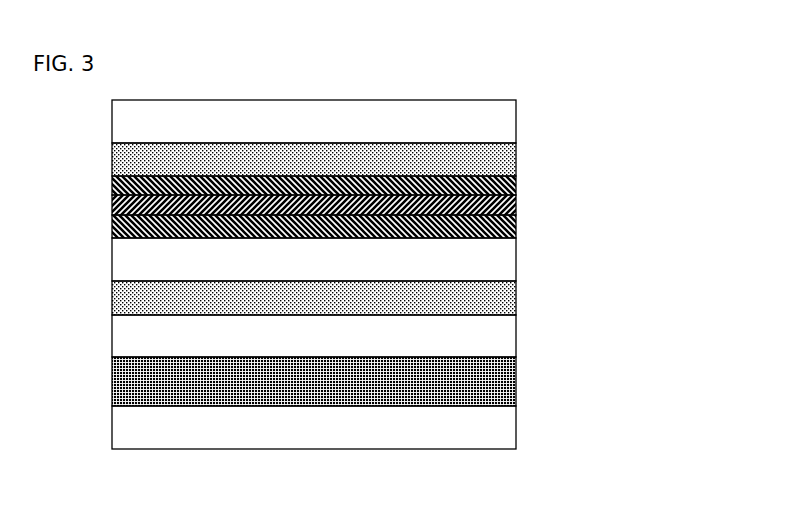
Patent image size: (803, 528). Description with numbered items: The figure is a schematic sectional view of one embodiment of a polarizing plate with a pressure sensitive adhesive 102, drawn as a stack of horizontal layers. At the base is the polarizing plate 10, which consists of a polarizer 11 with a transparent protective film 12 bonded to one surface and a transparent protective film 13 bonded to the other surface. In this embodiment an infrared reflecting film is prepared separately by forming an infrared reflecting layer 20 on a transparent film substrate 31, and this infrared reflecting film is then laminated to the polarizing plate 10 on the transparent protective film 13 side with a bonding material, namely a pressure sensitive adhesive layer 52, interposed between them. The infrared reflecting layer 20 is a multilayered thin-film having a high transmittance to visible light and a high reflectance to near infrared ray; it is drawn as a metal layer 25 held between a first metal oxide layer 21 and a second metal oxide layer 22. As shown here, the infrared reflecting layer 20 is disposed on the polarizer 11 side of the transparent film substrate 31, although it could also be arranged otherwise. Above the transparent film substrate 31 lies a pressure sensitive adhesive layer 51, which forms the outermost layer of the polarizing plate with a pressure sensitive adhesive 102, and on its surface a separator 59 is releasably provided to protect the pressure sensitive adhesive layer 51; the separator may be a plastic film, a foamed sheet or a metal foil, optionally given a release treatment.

The polarizing plate with a pressure sensitive adhesive 102 is at (390, 274).
The separator 59 is at (513, 124).
The pressure sensitive adhesive layer 51 is at (513, 160).
The infrared reflecting layer 20 is at (363, 208).
The first metal oxide layer 21 is at (517, 185).
The metal layer 25 is at (517, 206).
The second metal oxide layer 22 is at (343, 228).
The transparent film substrate 31 is at (517, 258).
The pressure sensitive adhesive layer 52 is at (517, 299).
The polarizing plate 10 is at (364, 382).
The transparent protective film 12 is at (517, 336).
The polarizer 11 is at (517, 379).
The transparent protective film 13 is at (343, 427).